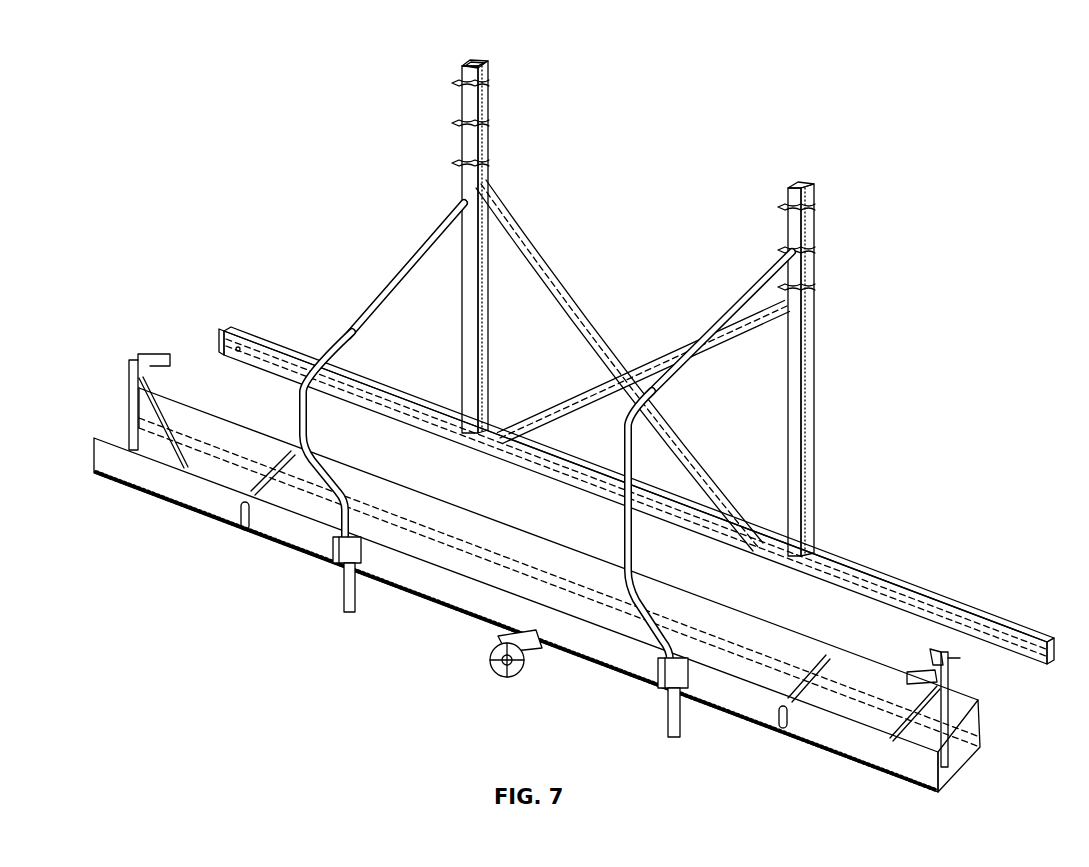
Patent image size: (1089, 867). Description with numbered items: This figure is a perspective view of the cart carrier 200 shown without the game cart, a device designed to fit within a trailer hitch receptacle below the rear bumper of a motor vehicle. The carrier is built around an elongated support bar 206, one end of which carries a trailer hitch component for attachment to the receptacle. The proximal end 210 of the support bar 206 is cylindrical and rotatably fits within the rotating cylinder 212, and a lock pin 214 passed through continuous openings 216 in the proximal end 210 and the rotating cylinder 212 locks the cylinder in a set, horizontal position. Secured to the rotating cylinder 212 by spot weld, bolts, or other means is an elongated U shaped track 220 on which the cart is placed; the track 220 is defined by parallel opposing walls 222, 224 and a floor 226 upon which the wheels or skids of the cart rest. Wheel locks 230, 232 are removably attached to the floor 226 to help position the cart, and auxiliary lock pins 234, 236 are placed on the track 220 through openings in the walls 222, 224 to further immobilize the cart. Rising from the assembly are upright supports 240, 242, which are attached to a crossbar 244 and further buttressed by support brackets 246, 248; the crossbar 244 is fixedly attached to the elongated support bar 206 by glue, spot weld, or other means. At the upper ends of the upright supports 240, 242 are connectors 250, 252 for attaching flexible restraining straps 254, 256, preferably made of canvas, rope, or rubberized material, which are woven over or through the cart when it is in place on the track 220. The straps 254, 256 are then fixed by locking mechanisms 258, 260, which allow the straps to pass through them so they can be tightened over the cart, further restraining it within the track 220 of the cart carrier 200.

The cart carrier 200 is at (322, 232).
The elongated support bar 206 is at (605, 528).
The proximal end 210 is at (495, 673).
The rotating cylinder 212 is at (530, 650).
The lock pin 214 is at (495, 650).
The continuous openings 216 is at (510, 680).
The U shaped track 220 is at (735, 705).
The wall 222 is at (195, 490).
The wall 224 is at (223, 435).
The floor 226 is at (740, 665).
The wheel lock 230 is at (150, 367).
The wheel lock 232 is at (948, 653).
The auxiliary lock pin 234 is at (243, 530).
The auxiliary lock pin 236 is at (792, 712).
The upright support 240 is at (462, 84).
The upright support 242 is at (815, 215).
The crossbar 244 is at (277, 343).
The support bracket 246 is at (567, 272).
The support bracket 248 is at (667, 347).
The connector 250 is at (455, 163).
The connector 252 is at (818, 245).
The flexible restraining strap 254 is at (387, 302).
The flexible restraining strap 256 is at (747, 282).
The locking mechanism 258 is at (362, 572).
The locking mechanism 260 is at (683, 720).